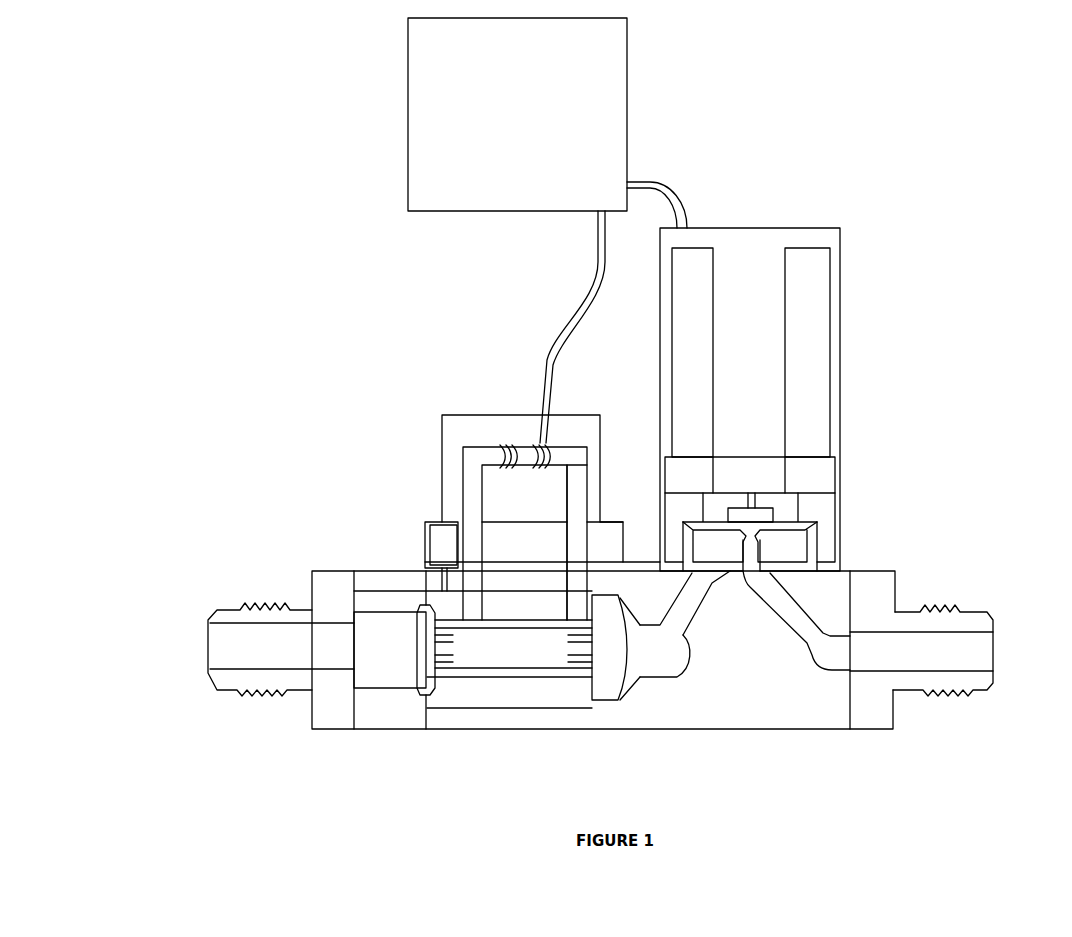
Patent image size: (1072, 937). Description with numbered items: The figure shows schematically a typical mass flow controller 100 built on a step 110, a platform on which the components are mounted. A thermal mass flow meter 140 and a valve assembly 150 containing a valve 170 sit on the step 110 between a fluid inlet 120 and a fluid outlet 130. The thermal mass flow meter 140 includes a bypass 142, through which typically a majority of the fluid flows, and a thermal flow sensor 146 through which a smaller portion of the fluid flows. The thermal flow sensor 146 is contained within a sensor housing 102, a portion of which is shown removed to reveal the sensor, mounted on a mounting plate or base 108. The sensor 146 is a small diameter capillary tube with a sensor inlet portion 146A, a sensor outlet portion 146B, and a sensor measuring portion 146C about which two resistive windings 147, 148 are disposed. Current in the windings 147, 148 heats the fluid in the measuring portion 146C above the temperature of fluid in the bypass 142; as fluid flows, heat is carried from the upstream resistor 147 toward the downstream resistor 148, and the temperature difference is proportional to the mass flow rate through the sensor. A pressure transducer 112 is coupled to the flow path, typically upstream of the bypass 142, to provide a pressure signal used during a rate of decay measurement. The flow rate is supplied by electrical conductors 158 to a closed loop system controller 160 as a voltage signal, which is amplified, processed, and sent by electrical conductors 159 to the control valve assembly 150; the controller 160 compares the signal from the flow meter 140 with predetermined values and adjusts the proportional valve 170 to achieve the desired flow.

The mass flow controller 100 is at (305, 122).
The sensor housing 102 is at (442, 432).
The mounting plate or base 108 is at (399, 539).
The step 110 is at (588, 570).
The pressure transducer 112 is at (427, 537).
The fluid inlet 120 is at (225, 647).
The fluid outlet 130 is at (982, 645).
The thermal mass flow meter 140 is at (442, 415).
The bypass 142 is at (500, 677).
The thermal flow sensor 146 is at (491, 431).
The sensor inlet portion 146A is at (462, 493).
The sensor outlet portion 146B is at (587, 483).
The sensor measuring portion 146C is at (524, 443).
The upstream resistive winding 147 is at (508, 443).
The downstream resistive winding 148 is at (538, 443).
The valve assembly 150 is at (812, 376).
The electrical conductors 158 is at (593, 290).
The electrical conductors 159 is at (668, 185).
The closed loop system controller 160 is at (517, 114).
The valve 170 is at (773, 512).